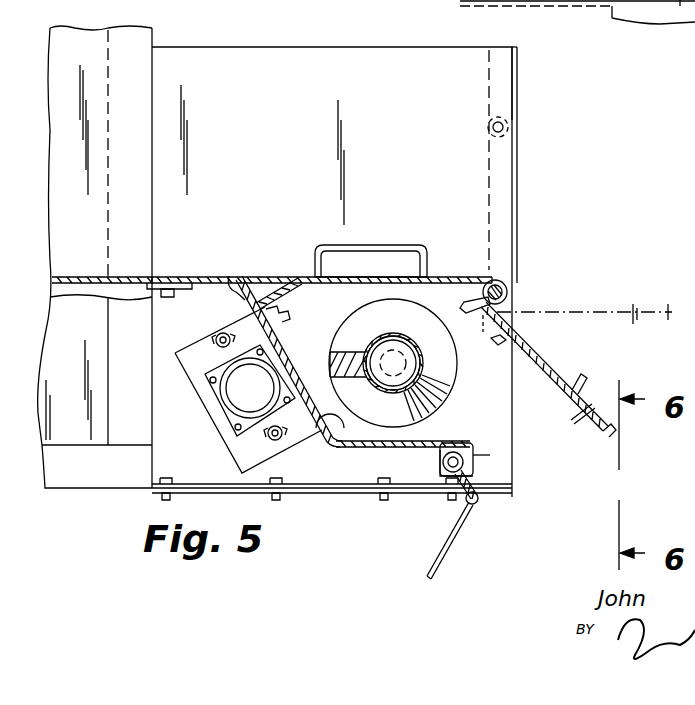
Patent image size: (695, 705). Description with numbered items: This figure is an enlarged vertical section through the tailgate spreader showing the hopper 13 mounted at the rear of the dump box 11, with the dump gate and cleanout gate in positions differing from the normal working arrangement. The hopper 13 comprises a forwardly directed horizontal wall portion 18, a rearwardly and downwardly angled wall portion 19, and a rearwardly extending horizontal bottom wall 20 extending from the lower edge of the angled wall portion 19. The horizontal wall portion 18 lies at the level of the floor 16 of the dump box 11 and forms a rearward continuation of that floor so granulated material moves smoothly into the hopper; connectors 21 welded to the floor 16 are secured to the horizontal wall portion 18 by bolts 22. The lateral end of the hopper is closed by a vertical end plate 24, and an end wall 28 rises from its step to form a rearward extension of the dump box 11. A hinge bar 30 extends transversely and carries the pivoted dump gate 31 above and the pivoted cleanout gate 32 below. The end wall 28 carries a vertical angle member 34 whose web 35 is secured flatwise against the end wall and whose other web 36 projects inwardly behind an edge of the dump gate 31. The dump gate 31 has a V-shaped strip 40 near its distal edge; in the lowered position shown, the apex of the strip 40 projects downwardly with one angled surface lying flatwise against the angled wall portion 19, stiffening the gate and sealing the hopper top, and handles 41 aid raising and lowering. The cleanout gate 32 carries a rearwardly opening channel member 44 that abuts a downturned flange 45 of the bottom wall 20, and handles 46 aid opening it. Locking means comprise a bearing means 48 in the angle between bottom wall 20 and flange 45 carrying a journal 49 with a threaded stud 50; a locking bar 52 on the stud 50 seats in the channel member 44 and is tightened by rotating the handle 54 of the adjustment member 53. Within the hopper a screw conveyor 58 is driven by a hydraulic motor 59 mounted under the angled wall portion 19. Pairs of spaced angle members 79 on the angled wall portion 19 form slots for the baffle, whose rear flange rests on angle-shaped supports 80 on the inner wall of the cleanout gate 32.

The dump box 11 is at (68, 85).
The hopper 13 is at (600, 240).
The floor 16 is at (75, 277).
The horizontal wall portion 18 is at (192, 277).
The angled wall portion 19 is at (318, 442).
The bottom wall 20 is at (433, 440).
The connectors 21 is at (150, 297).
The bolts 22 is at (166, 297).
The end plate 24 is at (388, 287).
The end wall 28 is at (356, 56).
The hinge bar 30 is at (508, 292).
The dump gate 31 is at (282, 277).
The cleanout gate 32 is at (543, 360).
The angle member 34 is at (517, 50).
The web 35 is at (517, 101).
The web 36 is at (492, 97).
The V-shaped strip 40 is at (278, 300).
The handles 41 is at (388, 287).
The channel member 44 is at (590, 432).
The downturned flange 45 is at (473, 450).
The handles 46 is at (584, 377).
The bearing means 48 is at (443, 466).
The journal 49 is at (452, 495).
The threaded stud 50 is at (473, 468).
The locking bar 52 is at (468, 500).
The adjustment member 53 is at (483, 503).
The handle 54 is at (438, 562).
The screw conveyor 58 is at (407, 333).
The hydraulic motor 59 is at (226, 410).
The angle members 79 is at (280, 322).
The angle-shaped supports 80 is at (493, 345).